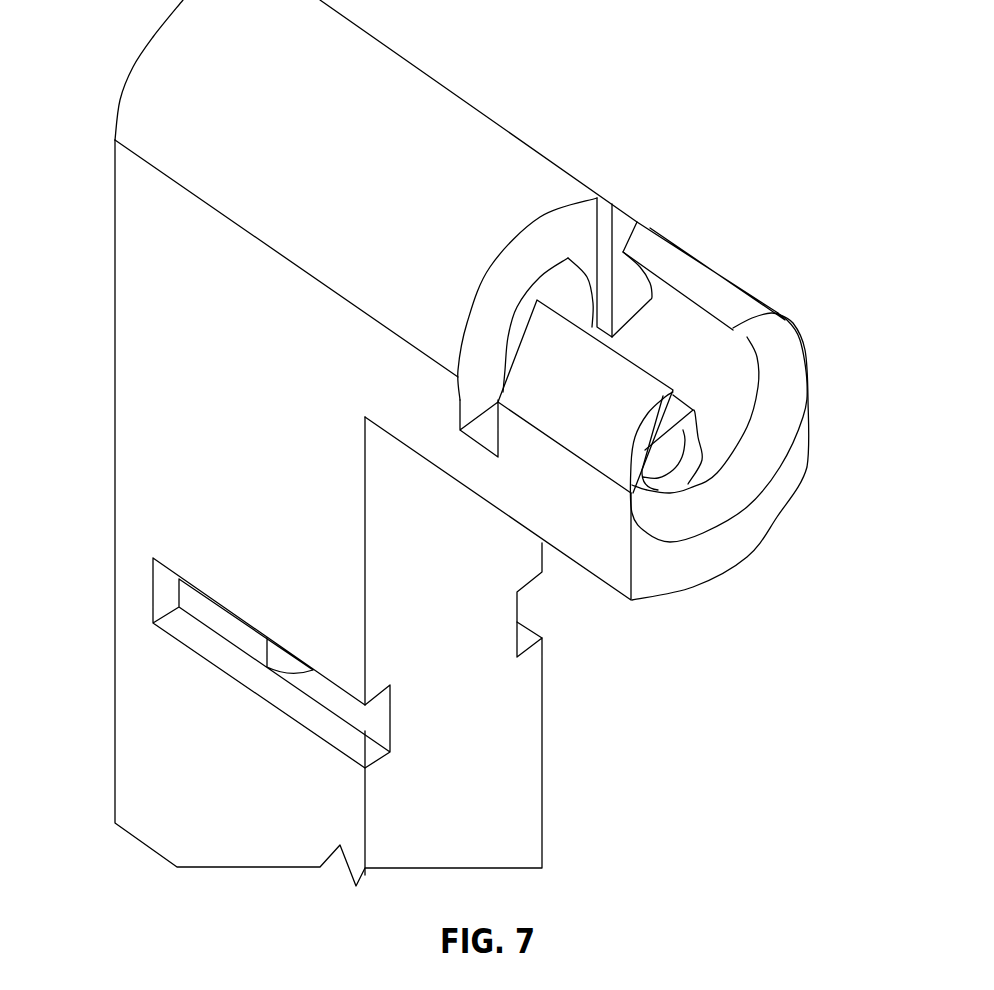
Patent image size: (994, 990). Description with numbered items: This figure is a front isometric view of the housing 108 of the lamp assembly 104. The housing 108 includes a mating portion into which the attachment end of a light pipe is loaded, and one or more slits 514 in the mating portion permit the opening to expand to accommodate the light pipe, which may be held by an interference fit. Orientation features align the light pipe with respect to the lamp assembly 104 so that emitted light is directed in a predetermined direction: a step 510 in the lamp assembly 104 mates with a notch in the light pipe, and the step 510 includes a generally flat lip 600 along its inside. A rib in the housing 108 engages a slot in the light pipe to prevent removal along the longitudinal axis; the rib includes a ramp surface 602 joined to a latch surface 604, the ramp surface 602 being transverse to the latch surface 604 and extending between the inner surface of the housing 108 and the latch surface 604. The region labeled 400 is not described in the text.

The lamp assembly 104 is at (113, 313).
The housing 108 is at (367, 73).
The cylindrical cradle 400 is at (807, 320).
The step 510 is at (622, 231).
The slit 514 is at (478, 398).
The lip 600 is at (603, 238).
The ramp surface 602 is at (677, 445).
The latch surface 604 is at (676, 391).